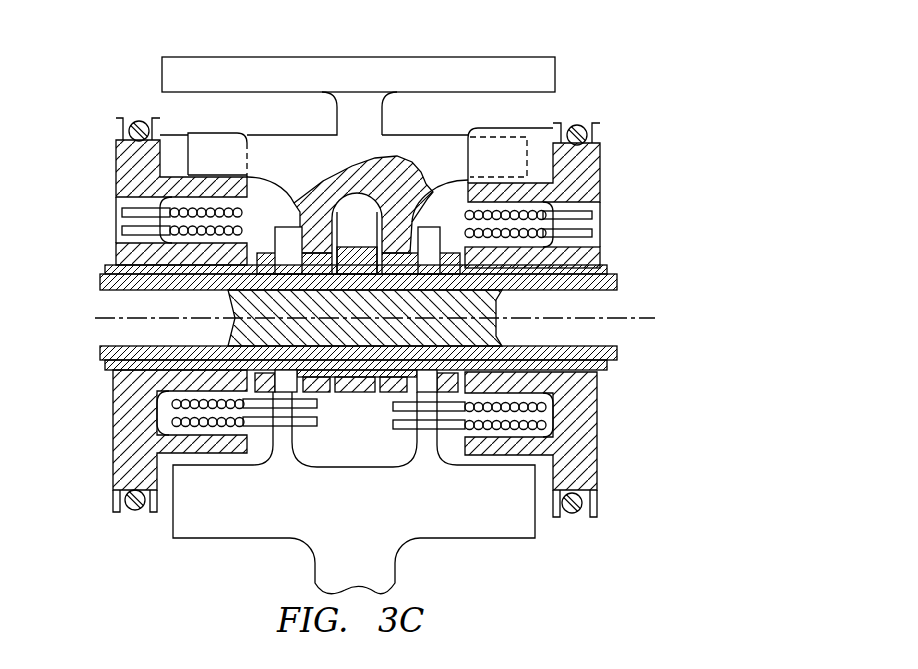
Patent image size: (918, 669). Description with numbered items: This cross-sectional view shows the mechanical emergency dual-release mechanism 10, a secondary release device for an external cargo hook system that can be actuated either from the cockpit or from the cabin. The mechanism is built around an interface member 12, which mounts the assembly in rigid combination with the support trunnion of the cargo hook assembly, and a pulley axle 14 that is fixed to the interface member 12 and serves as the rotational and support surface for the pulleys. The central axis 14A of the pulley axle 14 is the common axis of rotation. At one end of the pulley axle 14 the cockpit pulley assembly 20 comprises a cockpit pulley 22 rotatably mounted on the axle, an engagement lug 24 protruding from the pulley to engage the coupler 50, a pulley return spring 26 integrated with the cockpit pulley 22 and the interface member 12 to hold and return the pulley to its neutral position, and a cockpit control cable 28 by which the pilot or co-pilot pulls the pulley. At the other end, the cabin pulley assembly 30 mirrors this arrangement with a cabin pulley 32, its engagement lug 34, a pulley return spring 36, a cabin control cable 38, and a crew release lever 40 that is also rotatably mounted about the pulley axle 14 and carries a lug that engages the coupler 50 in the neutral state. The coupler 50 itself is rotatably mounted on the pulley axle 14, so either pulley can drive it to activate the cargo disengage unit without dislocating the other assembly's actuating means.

The emergency dual-release mechanism 10 is at (683, 194).
The interface member 12 is at (408, 393).
The pulley axle 14 is at (620, 297).
The axis of the pulley axle 14A is at (652, 320).
The cockpit pulley assembly 20 is at (80, 428).
The cockpit pulley 22 is at (117, 165).
The engagement lug 24 is at (178, 133).
The pulley return spring 26 is at (162, 240).
The cockpit control cable 28 is at (135, 512).
The cabin pulley assembly 30 is at (620, 432).
The cabin pulley 32 is at (600, 178).
The engagement lug 34 is at (535, 140).
The pulley return spring 36 is at (463, 213).
The cabin control cable 38 is at (572, 515).
The crew release lever 40 is at (472, 72).
The coupler 50 is at (260, 135).